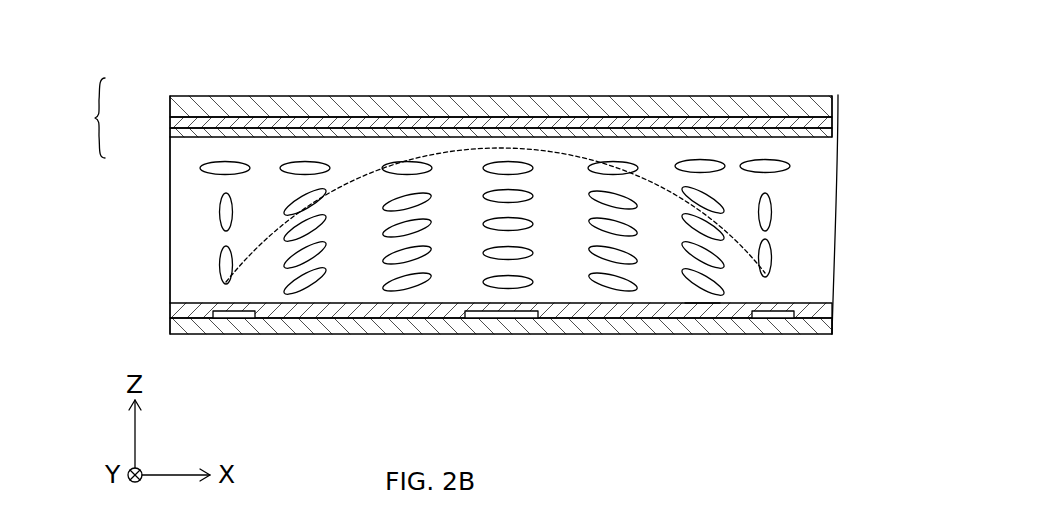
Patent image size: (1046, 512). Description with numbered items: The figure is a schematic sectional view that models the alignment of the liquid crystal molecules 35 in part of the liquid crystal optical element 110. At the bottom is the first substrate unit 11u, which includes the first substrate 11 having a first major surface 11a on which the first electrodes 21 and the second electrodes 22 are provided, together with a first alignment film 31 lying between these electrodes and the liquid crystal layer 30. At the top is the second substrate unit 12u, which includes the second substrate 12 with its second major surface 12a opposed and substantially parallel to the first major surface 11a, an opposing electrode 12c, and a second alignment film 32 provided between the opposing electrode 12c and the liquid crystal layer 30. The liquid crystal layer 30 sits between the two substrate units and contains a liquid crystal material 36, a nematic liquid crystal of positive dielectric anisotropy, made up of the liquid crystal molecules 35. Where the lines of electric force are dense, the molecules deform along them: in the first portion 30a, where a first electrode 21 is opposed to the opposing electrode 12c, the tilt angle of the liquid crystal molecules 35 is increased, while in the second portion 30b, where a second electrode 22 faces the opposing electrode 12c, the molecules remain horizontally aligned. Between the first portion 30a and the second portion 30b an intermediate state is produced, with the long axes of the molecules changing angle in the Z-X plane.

The liquid crystal optical element 110 is at (628, 96).
The second substrate 12 is at (182, 104).
The opposing electrode 12c is at (182, 122).
The second alignment film 32 is at (182, 132).
The second substrate unit 12u is at (74, 118).
The second major surface 12a is at (797, 114).
The liquid crystal molecules 35 is at (765, 200).
The liquid crystal material 36 is at (185, 190).
The liquid crystal layer 30 is at (168, 225).
The first alignment film 31 is at (185, 310).
The first substrate 11 is at (185, 327).
The first major surface 11a is at (714, 317).
The first substrate unit 11u is at (836, 322).
The first electrodes 21 is at (235, 318).
The second electrodes 22 is at (523, 318).
The first portion 30a is at (205, 263).
The second portion 30b is at (468, 261).